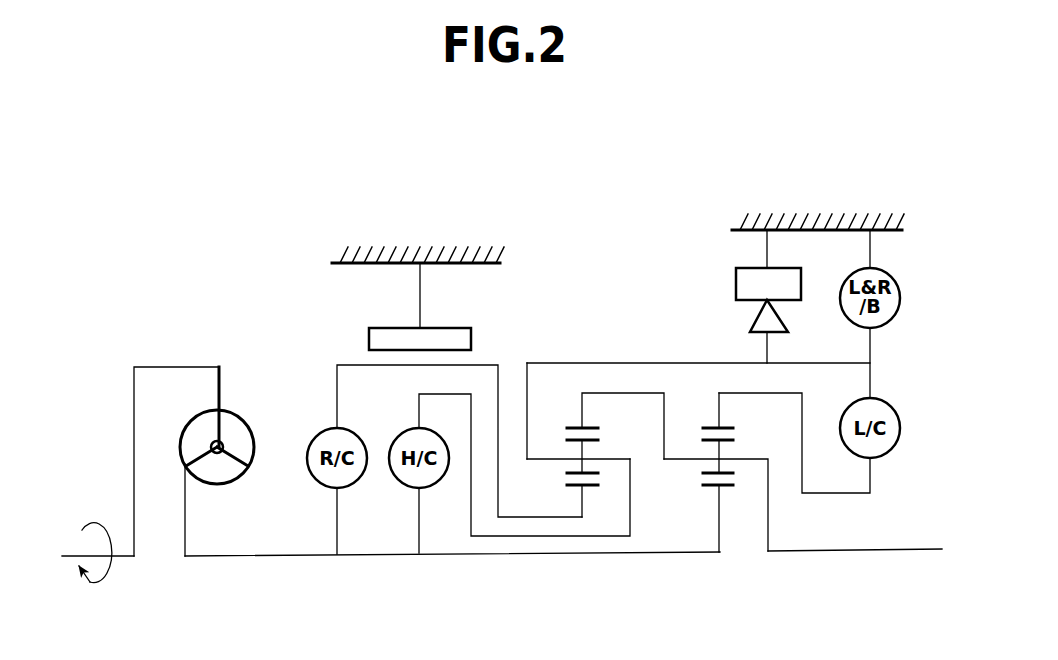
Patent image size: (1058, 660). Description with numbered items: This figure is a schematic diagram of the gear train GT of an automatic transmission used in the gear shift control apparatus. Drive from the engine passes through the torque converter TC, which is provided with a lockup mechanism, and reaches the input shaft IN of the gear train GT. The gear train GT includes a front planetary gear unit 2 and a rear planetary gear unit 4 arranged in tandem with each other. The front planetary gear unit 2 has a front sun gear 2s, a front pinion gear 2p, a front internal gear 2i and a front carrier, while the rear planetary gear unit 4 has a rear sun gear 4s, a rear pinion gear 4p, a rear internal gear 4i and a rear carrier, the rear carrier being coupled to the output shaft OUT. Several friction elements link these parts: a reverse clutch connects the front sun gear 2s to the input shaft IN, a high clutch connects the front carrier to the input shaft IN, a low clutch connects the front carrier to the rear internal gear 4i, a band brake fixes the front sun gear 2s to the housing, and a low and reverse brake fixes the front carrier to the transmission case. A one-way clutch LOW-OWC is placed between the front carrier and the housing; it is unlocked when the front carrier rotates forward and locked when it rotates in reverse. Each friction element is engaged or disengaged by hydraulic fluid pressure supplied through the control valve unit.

The front planetary gear unit 2 is at (567, 506).
The front internal gear 2i is at (573, 426).
The front pinion gear 2p is at (588, 450).
The front sun gear 2s is at (590, 507).
The rear planetary gear unit 4 is at (699, 506).
The rear internal gear 4i is at (710, 426).
The rear pinion gear 4p is at (725, 450).
The rear sun gear 4s is at (725, 490).
The torque converter TC is at (240, 403).
The gear train GT is at (604, 237).
The one-way clutch LOW-OWC is at (736, 284).
The input shaft IN is at (288, 556).
The output shaft OUT is at (861, 551).